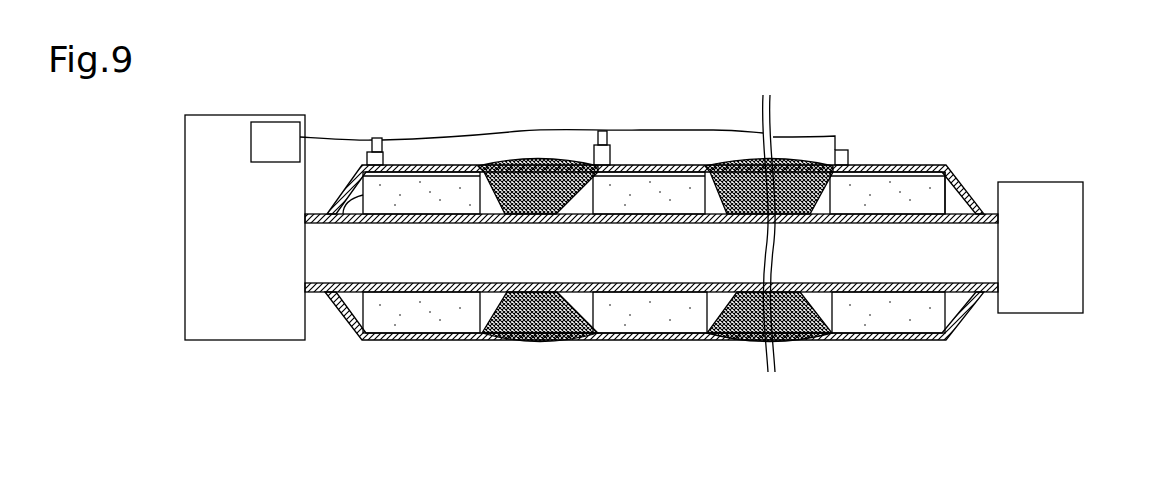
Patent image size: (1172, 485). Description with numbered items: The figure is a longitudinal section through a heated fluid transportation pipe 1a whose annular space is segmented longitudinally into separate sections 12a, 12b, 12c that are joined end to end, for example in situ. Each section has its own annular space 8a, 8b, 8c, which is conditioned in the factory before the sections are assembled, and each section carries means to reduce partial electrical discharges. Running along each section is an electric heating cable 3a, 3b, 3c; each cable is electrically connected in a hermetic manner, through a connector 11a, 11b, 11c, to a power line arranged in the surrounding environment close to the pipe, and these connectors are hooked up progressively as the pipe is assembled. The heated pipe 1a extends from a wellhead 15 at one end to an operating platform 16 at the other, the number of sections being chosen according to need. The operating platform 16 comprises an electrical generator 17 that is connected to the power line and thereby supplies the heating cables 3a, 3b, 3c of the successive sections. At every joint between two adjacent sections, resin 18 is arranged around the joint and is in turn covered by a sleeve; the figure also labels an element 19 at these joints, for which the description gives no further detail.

The heated fluid transportation pipe 1a is at (1006, 104).
The electric heating cable 3a is at (352, 224).
The electric heating cable 3b is at (578, 224).
The electric heating cable 3c is at (808, 224).
The annular space 8a is at (486, 164).
The annular space 8b is at (717, 157).
The annular space 8c is at (953, 165).
The connector 11a is at (379, 138).
The connector 11b is at (606, 132).
The connector 11c is at (844, 150).
The section 12a is at (423, 344).
The section 12b is at (654, 344).
The section 12c is at (887, 344).
The wellhead 15 is at (1040, 247).
The operating platform 16 is at (185, 290).
The electrical generator 17 is at (275, 142).
The resin 18 is at (553, 347).
The cover 19 is at (507, 348).